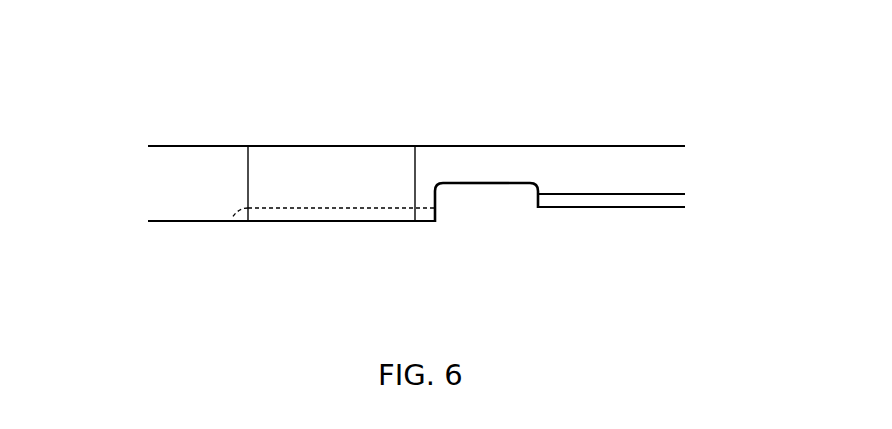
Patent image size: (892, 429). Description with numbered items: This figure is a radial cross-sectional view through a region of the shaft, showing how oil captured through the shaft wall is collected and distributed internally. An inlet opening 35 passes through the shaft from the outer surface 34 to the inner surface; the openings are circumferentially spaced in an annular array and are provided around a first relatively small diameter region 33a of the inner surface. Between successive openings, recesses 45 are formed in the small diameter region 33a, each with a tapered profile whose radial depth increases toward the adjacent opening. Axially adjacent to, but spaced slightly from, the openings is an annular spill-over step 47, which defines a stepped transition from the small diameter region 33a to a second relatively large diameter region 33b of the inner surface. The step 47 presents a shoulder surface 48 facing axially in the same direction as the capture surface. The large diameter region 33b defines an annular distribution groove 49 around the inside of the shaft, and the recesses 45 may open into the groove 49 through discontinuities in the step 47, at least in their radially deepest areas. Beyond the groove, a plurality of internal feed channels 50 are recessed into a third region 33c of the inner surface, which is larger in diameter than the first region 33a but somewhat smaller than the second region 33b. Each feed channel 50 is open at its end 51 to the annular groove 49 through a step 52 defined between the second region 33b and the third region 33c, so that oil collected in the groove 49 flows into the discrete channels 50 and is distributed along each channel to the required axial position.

The outer surface 34 is at (185, 145).
The first relatively small diameter region 33a is at (183, 222).
The inlet opening 35 is at (327, 155).
The recess 45 is at (297, 222).
The annular spill-over step 47 is at (435, 222).
The shoulder surface 48 is at (440, 197).
The annular distribution groove 49 is at (478, 201).
The second relatively large diameter region 33b is at (488, 185).
The step 52 is at (530, 183).
The end 51 is at (542, 209).
The internal feed channel 50 is at (645, 203).
The third region 33c is at (585, 208).